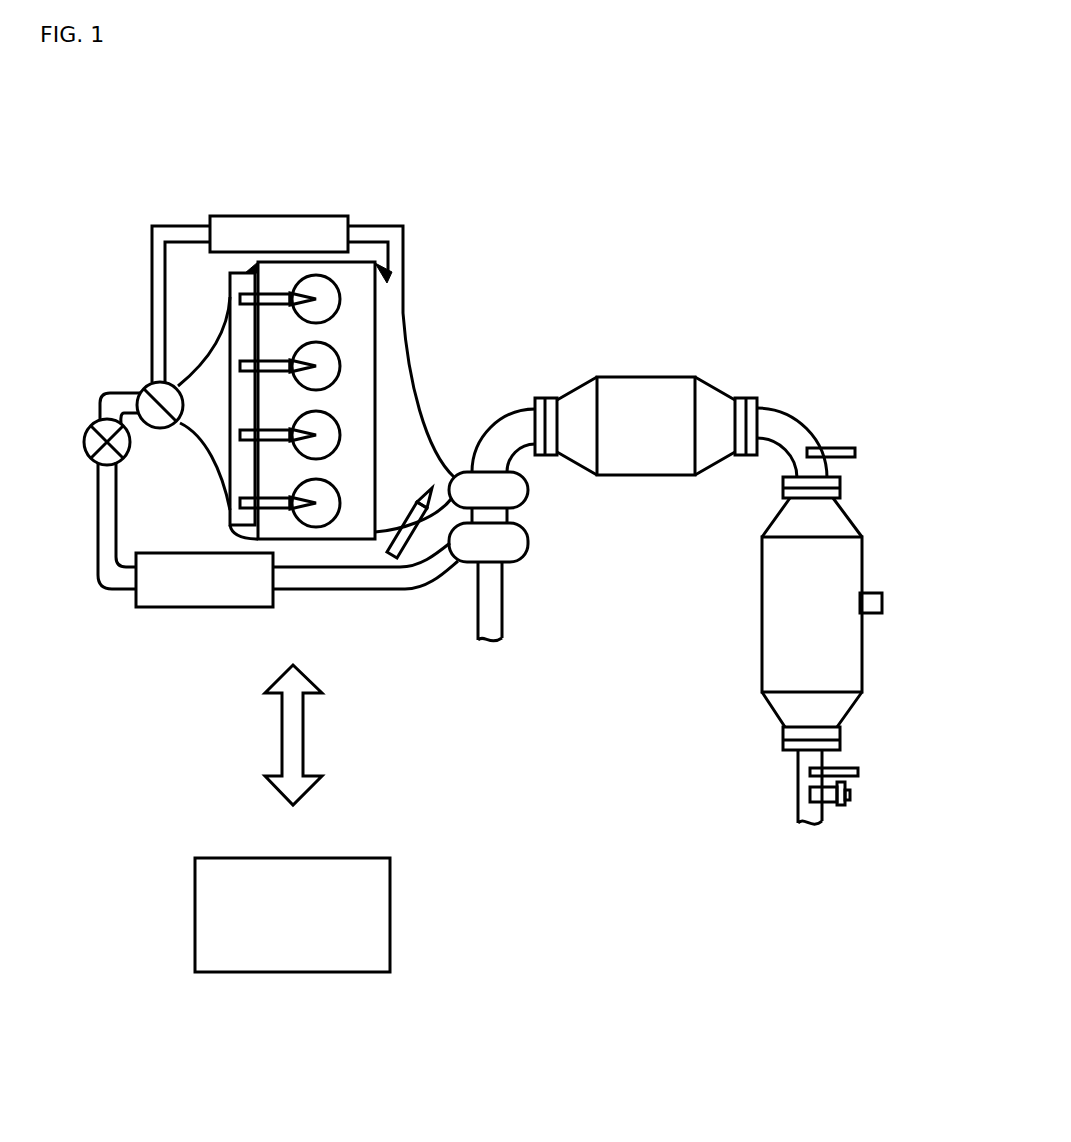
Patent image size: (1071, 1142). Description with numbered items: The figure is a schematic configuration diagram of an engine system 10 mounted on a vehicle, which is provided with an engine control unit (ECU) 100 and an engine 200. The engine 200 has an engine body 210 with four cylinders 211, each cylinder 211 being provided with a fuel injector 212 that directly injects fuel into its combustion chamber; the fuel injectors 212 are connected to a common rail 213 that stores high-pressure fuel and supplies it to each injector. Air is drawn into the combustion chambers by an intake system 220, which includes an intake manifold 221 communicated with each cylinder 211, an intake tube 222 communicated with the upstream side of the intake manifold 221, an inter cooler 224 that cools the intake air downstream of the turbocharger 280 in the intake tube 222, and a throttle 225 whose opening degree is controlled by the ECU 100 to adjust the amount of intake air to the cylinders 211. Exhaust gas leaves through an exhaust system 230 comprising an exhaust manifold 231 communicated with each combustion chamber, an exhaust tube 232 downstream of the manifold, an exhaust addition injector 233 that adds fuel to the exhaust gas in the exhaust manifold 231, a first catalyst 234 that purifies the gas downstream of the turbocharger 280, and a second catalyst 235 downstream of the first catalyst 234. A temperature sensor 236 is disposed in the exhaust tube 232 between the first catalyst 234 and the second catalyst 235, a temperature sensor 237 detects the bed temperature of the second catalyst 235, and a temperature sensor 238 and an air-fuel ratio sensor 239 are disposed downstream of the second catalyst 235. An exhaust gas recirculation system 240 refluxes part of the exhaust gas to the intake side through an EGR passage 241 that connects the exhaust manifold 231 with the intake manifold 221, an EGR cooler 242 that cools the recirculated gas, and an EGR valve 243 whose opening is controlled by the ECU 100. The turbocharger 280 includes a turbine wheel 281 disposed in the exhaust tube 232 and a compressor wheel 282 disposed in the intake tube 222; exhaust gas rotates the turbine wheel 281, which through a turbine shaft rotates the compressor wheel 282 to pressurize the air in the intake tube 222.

The engine system 10 is at (775, 63).
The engine control unit (ECU) 100 is at (195, 915).
The engine 200 is at (620, 193).
The engine body 210 is at (375, 356).
The cylinder 211 is at (327, 300).
The fuel injector 212 is at (240, 298).
The common rail 213 is at (230, 288).
The intake system 220 is at (372, 630).
The intake manifold 221 is at (193, 433).
The intake tube 222 is at (320, 590).
The inter cooler 224 is at (205, 607).
The throttle 225 is at (88, 433).
The exhaust system 230 is at (602, 308).
The exhaust manifold 231 is at (424, 406).
The exhaust tube 232 is at (502, 422).
The exhaust addition injector 233 is at (388, 552).
The first catalyst 234 is at (645, 377).
The second catalyst 235 is at (862, 563).
The temperature sensor 236 is at (855, 452).
The temperature sensor 237 is at (870, 603).
The temperature sensor 238 is at (858, 771).
The air-fuel ratio sensor 239 is at (850, 795).
The exhaust gas recirculation (EGR) system 240 is at (332, 143).
The EGR passage 241 is at (368, 226).
The EGR cooler 242 is at (283, 216).
The EGR valve 243 is at (145, 383).
The turbocharger 280 is at (600, 505).
The turbine wheel 281 is at (528, 490).
The compressor wheel 282 is at (528, 545).